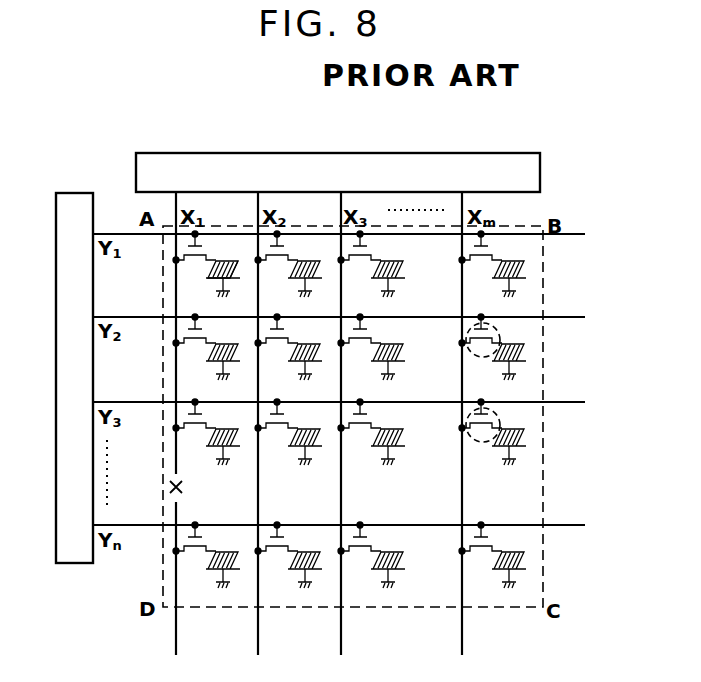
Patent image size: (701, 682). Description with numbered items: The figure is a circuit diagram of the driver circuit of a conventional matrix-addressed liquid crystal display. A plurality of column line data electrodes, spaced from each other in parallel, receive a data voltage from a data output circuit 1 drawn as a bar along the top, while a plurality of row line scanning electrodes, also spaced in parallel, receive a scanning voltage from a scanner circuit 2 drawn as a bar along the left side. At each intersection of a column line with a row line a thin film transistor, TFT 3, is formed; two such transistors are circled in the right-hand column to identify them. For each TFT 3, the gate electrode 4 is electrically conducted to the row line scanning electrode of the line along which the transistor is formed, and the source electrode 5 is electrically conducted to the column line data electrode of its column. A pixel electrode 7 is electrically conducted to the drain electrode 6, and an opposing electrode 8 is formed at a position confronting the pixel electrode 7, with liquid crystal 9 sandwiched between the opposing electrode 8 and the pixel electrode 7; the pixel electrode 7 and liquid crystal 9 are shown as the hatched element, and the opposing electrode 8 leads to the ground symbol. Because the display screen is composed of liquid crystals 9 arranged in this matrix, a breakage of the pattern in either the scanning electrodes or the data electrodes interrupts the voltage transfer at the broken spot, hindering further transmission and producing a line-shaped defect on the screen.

The data output circuit 1 is at (540, 166).
The scanner circuit 2 is at (56, 556).
The thin film transistor 3 is at (502, 336).
The gate electrode 4 is at (201, 247).
The source electrode 5 is at (185, 262).
The drain electrode 6 is at (208, 254).
The pixel electrode 7 is at (234, 262).
The opposing electrode 8 is at (232, 280).
The liquid crystal 9 is at (237, 269).